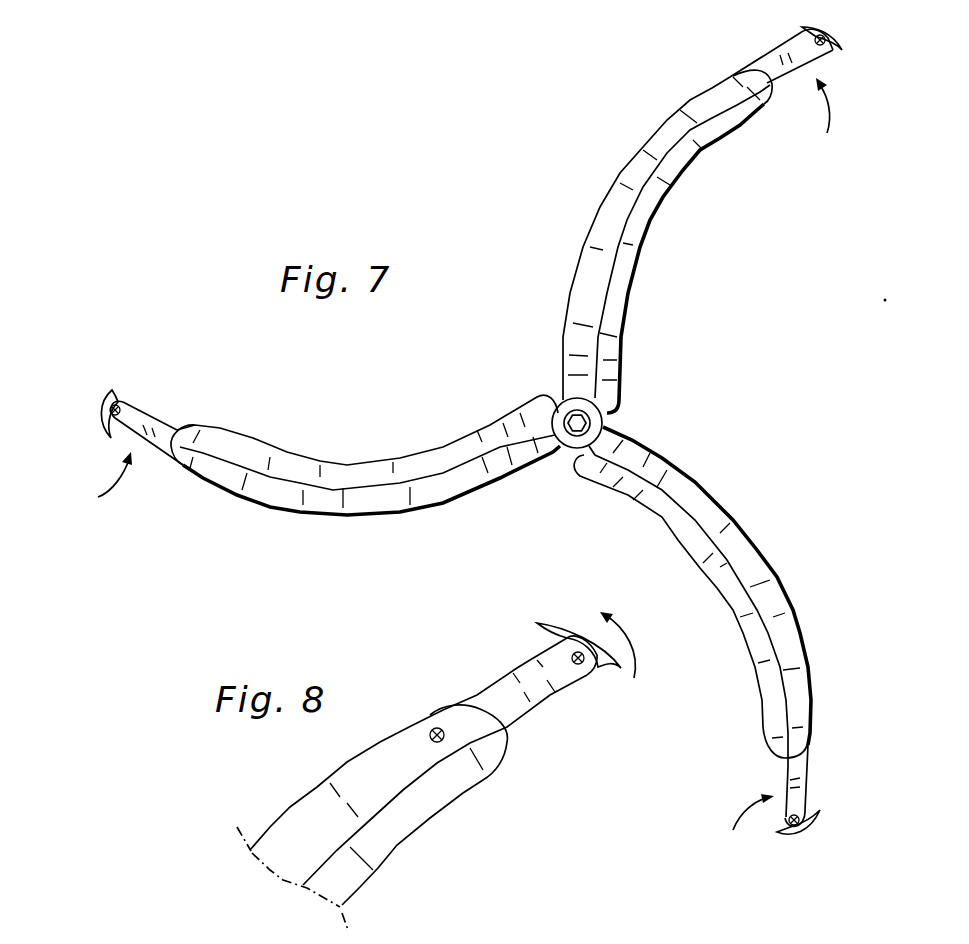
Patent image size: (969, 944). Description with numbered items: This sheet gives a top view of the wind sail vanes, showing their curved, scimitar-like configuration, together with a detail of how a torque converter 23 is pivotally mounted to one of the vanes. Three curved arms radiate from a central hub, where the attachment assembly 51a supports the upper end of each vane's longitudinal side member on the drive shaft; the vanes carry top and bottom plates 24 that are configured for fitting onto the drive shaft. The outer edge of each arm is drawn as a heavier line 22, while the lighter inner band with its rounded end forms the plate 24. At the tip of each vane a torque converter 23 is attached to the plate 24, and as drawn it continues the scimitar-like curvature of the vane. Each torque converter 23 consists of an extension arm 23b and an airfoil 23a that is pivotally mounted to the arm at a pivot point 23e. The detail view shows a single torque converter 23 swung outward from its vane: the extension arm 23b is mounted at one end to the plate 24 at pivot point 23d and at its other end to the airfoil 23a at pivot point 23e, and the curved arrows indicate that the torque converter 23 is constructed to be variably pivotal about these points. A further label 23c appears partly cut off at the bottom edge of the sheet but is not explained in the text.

In FIG. 7, the blade / outer edge of arm 22 is at (652, 219).
In FIG. 7, the plate 24 is at (603, 207).
In FIG. 7, the torque converter 23 is at (443, 470).
In FIG. 7, the airfoil 23a is at (113, 427).
In FIG. 8, the airfoil 23a is at (567, 634).
In FIG. 7, the extension arm 23b is at (158, 428).
In FIG. 8, the extension arm 23b is at (515, 712).
In FIG. 8, the hook part 23c is at (616, 937).
In FIG. 8, the pivot point 23d is at (437, 743).
In FIG. 7, the pivot point 23e is at (113, 407).
In FIG. 8, the pivot point 23e is at (578, 664).
In FIG. 7, the attachment assembly 51a is at (592, 425).